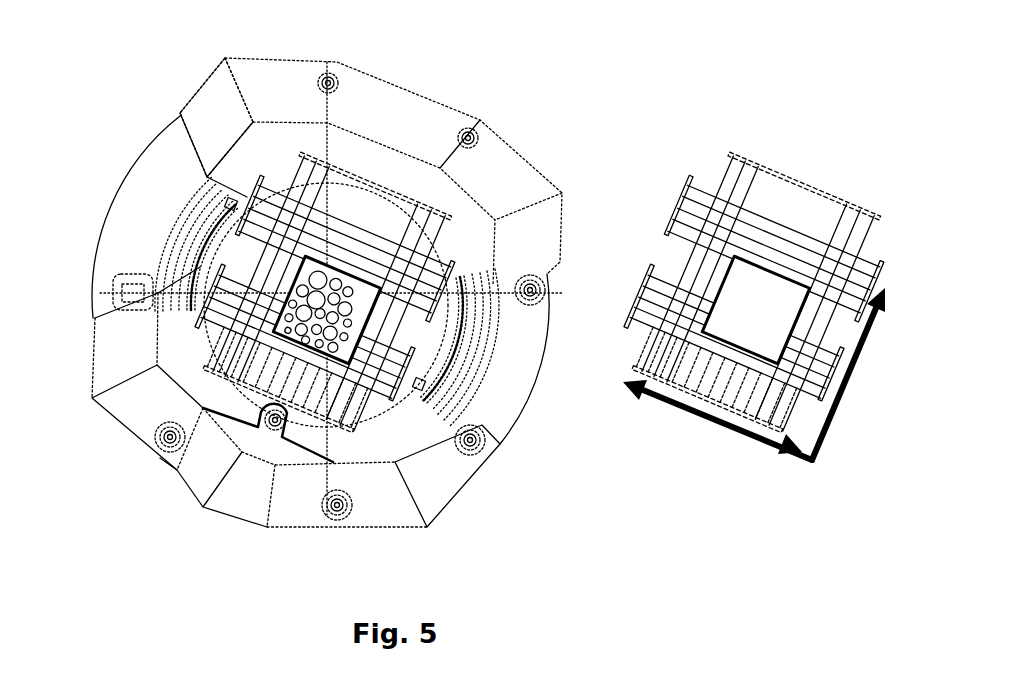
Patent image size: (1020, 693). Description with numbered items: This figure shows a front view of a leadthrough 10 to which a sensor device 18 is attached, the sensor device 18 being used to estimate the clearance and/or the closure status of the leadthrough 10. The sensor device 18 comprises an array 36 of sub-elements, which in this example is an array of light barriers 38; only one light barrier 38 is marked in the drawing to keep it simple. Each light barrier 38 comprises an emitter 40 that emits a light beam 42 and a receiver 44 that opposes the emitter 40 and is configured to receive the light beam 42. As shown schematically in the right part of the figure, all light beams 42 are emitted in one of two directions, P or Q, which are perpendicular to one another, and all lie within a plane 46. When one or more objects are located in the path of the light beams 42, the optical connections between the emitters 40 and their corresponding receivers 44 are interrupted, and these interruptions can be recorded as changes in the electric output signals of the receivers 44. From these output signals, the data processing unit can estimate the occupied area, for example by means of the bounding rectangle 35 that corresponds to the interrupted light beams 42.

The leadthrough 10 is at (212, 75).
The sensor device 18 is at (217, 117).
The bounding rectangle 35 is at (300, 289).
The array of sub-elements 36 is at (189, 383).
The light barrier 38 is at (250, 392).
The emitter 40 is at (357, 435).
The light beam 42 is at (358, 418).
The receiver 44 is at (440, 217).
The plane 46 is at (797, 447).